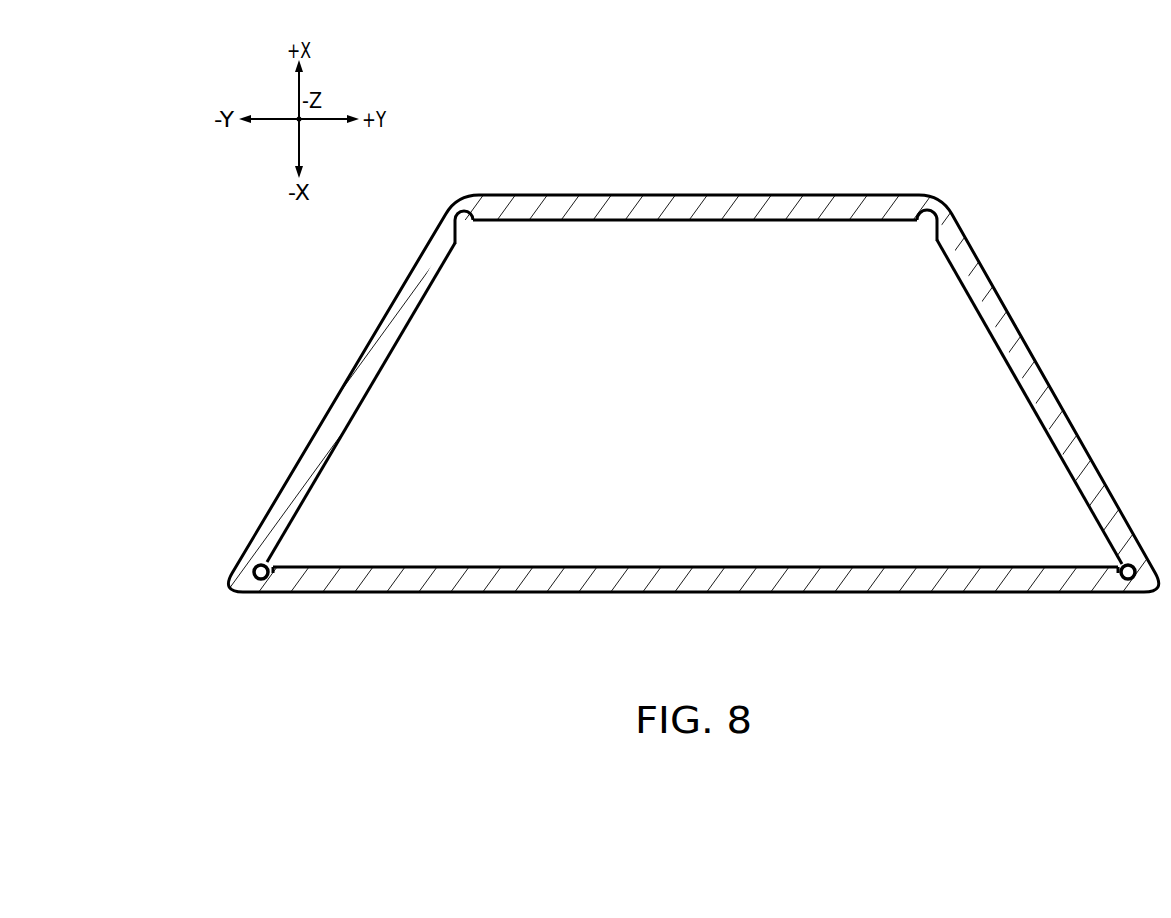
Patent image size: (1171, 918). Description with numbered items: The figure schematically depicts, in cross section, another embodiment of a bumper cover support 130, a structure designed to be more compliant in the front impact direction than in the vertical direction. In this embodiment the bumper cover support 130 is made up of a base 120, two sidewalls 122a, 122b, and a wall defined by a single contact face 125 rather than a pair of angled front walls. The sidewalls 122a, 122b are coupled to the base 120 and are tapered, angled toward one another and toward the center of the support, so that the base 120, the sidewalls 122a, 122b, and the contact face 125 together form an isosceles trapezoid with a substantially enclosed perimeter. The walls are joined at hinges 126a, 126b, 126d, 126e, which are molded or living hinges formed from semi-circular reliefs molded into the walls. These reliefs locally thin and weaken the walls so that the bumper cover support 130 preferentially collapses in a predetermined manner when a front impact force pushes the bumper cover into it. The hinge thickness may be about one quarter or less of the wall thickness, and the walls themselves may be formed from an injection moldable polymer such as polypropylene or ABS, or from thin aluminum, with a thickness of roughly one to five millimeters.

The bumper cover support 130 is at (950, 166).
The contact face 125 is at (698, 194).
The base 120 is at (465, 594).
The sidewall 122a is at (355, 363).
The sidewall 122b is at (1037, 363).
The hinge 126a is at (257, 561).
The hinge 126b is at (464, 224).
The hinge 126d is at (928, 224).
The hinge 126e is at (1131, 561).